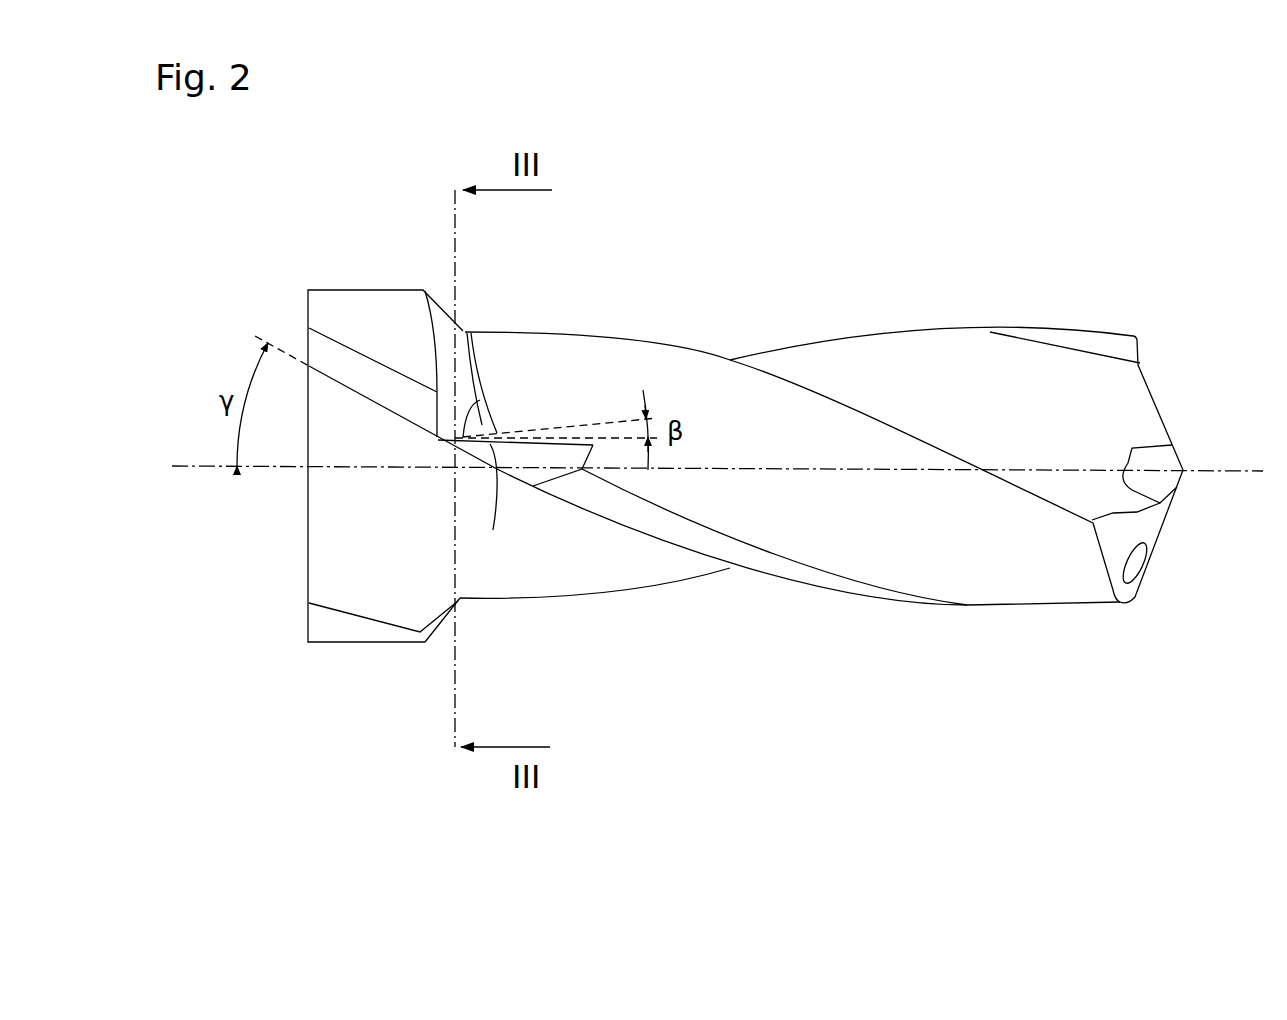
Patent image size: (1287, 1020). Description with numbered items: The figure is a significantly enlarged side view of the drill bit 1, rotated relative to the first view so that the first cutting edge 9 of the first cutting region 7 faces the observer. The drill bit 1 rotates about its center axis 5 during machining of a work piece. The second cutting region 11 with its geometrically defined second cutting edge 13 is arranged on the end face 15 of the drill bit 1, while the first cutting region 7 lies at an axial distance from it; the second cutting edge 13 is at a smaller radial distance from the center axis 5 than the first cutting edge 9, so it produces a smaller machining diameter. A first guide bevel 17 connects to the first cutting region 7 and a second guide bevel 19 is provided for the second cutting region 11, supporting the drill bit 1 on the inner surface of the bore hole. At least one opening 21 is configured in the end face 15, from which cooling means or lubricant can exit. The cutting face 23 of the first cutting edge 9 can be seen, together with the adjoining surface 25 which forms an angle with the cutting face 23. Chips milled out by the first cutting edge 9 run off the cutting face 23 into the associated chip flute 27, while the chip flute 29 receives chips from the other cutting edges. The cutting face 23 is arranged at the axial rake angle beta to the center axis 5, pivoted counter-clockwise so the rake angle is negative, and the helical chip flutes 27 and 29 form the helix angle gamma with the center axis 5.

The drill bit 1 is at (834, 260).
The center axis 5 is at (1236, 471).
The first cutting region 7 is at (482, 304).
The first cutting edge 9 is at (465, 433).
The second cutting region 11 is at (1150, 330).
The second cutting edge 13 is at (1152, 378).
The end face 15 is at (1168, 523).
The first guide bevel 17 is at (362, 372).
The second guide bevel 19 is at (823, 585).
The opening 21 is at (1137, 562).
The cutting face 23 is at (493, 530).
The surface 25 is at (558, 459).
The chip flute 27 is at (385, 466).
The chip flute 29 is at (935, 363).